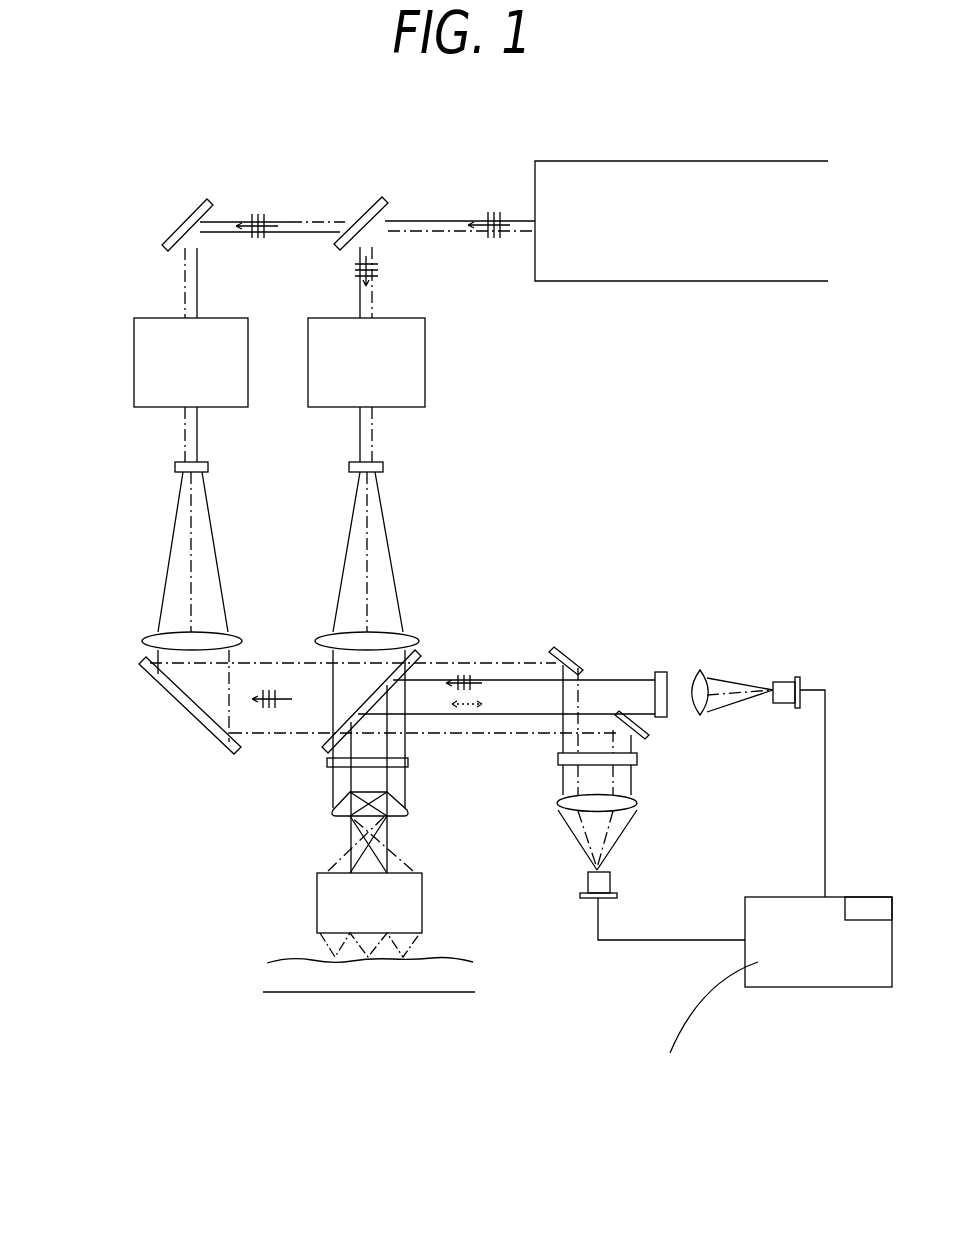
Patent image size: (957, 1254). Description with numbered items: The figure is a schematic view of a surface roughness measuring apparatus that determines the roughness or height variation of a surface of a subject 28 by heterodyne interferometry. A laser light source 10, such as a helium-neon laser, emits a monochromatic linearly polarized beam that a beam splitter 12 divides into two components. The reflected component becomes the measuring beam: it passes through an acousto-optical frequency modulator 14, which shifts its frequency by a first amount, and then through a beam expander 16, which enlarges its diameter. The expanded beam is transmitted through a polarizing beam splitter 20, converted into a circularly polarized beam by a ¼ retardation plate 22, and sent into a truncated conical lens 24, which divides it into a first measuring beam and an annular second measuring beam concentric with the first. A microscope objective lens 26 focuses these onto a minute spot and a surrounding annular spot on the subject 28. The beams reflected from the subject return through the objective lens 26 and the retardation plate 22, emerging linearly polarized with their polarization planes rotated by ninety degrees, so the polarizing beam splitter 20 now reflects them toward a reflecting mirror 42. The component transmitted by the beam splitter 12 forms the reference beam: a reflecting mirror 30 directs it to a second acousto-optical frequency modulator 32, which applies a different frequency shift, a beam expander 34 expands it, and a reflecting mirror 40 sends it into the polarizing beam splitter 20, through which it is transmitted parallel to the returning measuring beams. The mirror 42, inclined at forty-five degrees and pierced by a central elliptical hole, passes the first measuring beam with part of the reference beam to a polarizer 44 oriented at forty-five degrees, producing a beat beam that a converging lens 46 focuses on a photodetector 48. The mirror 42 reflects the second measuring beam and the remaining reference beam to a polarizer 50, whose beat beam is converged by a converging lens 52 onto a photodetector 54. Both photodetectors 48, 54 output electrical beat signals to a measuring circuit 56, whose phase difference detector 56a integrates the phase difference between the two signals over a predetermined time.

The laser light source 10 is at (687, 170).
The beam splitter 12 is at (388, 200).
The acousto-optical frequency modulator 14 is at (425, 366).
The beam expander 16 is at (429, 462).
The polarizing beam splitter 20 is at (324, 750).
The ¼ retardation plate 22 is at (408, 762).
The truncated conical lens 24 is at (408, 806).
The microscope objective lens 26 is at (422, 903).
The subject 28 is at (372, 988).
The reflecting mirror 30 is at (200, 203).
The acousto-optical frequency modulator 32 is at (134, 368).
The beam expander 34 is at (134, 462).
The reflecting mirror 40 is at (233, 748).
The reflecting mirror 42 is at (556, 650).
The polarizer 44 is at (661, 671).
The converging lens 46 is at (702, 670).
The photodetector 48 is at (797, 677).
The polarizer 50 is at (638, 758).
The converging lens 52 is at (638, 803).
The photodetector 54 is at (612, 882).
The measuring circuit 56 is at (831, 994).
The phase difference detector 56a is at (868, 904).